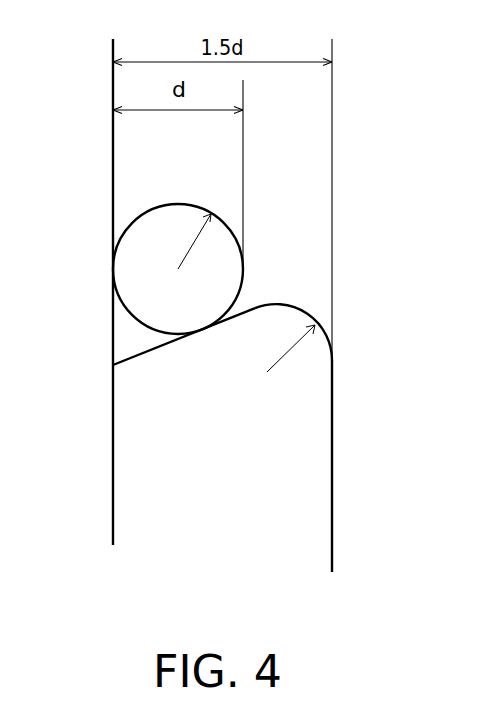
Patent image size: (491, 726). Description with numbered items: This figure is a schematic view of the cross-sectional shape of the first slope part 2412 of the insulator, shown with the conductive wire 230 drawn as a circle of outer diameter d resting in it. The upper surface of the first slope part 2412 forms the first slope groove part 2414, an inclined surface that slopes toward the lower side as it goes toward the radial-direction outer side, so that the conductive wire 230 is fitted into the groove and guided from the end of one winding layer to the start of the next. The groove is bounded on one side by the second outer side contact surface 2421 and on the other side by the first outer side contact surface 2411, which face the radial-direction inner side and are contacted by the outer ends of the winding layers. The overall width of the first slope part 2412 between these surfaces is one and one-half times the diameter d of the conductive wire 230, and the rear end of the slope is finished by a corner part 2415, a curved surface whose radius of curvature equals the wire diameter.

The conductive wire 230 is at (122, 262).
The first outer side contact surface 2411 is at (332, 407).
The first slope part 2412 is at (168, 337).
The first slope groove part 2414 is at (113, 357).
The corner part 2415 is at (284, 306).
The second outer side contact surface 2421 is at (113, 182).